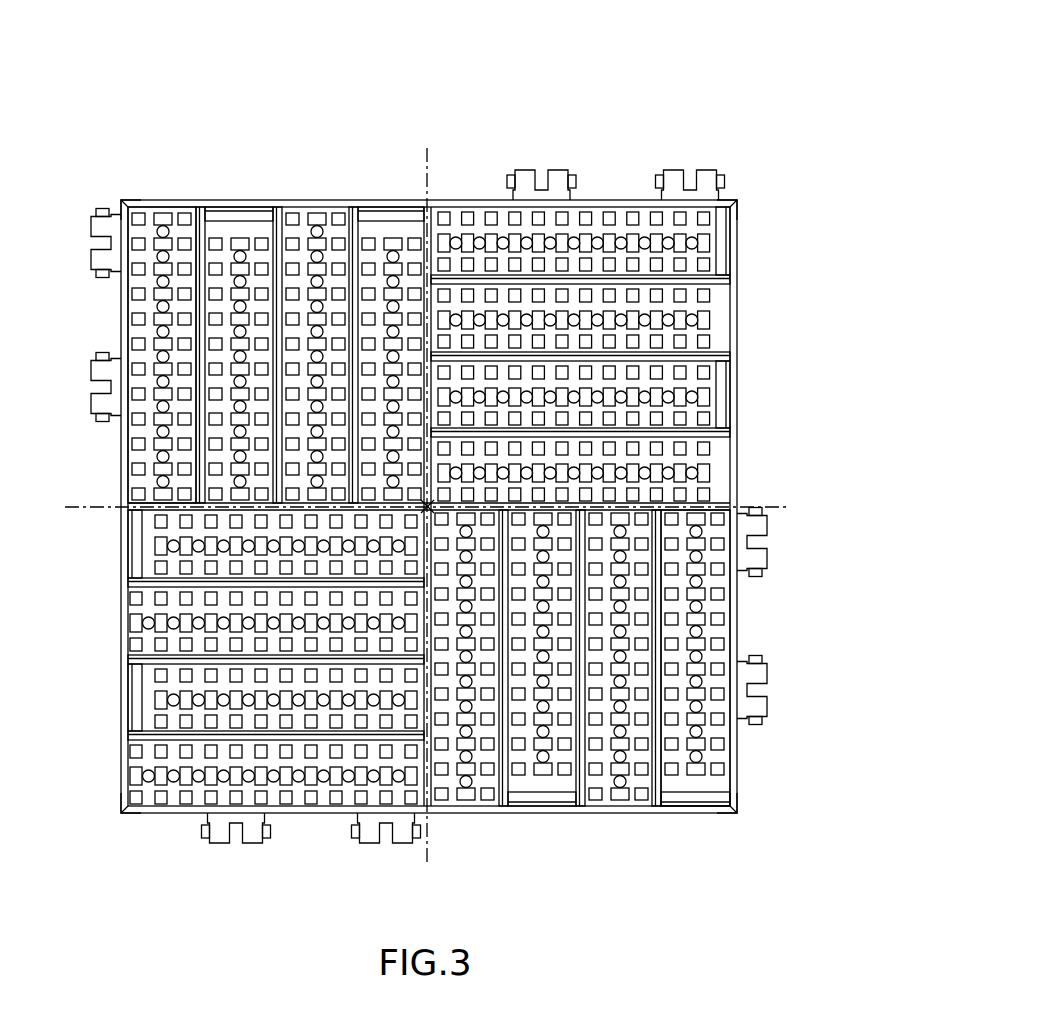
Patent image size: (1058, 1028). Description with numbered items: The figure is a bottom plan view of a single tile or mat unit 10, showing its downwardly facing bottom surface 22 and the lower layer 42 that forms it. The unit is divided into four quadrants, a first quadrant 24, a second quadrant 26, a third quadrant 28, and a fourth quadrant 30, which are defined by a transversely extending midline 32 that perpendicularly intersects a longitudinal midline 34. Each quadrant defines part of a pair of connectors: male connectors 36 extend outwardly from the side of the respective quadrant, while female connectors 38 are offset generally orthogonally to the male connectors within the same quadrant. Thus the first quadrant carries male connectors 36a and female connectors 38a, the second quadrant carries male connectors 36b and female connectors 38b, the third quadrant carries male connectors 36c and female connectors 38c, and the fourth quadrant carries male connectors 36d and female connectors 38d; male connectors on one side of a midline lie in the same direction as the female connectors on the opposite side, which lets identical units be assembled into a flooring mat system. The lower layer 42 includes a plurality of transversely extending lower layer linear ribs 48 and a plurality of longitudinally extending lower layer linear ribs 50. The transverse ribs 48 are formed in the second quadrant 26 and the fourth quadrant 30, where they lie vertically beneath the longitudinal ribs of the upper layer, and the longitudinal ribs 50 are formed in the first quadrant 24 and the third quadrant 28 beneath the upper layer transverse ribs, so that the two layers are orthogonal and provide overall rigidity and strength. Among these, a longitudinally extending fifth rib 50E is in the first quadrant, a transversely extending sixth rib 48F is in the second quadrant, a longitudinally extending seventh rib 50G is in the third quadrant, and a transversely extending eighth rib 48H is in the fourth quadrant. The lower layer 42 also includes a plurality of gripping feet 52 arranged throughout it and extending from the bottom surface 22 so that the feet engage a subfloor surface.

The single mat unit 10 is at (431, 467).
The downwardly facing bottom surface 22 is at (431, 507).
The first quadrant 24 is at (745, 830).
The second quadrant 26 is at (120, 830).
The third quadrant 28 is at (120, 192).
The fourth quadrant 30 is at (745, 190).
The transverse midline 32 is at (782, 502).
The longitudinal midline 34 is at (432, 866).
The male connectors 36 is at (430, 506).
The male connectors of the first quadrant 36a is at (762, 548).
The male connectors of the second quadrant 36b is at (237, 846).
The male connectors of the third quadrant 36c is at (107, 388).
The male connectors of the fourth quadrant 36d is at (690, 172).
The female connectors 38 is at (432, 506).
The female connectors of the first quadrant 38a is at (540, 796).
The female connectors of the second quadrant 38b is at (135, 542).
The female connectors of the third quadrant 38c is at (390, 213).
The female connectors of the fourth quadrant 38d is at (722, 252).
The lower layer 42 is at (192, 352).
The lower layer transverse linear ribs 48 is at (425, 509).
The sixth rib 48F is at (292, 737).
The eighth rib 48H is at (638, 280).
The lower layer longitudinal linear ribs 50 is at (427, 507).
The fifth rib 50E is at (657, 644).
The seventh rib 50G is at (197, 446).
The gripping feet 52 is at (160, 310).